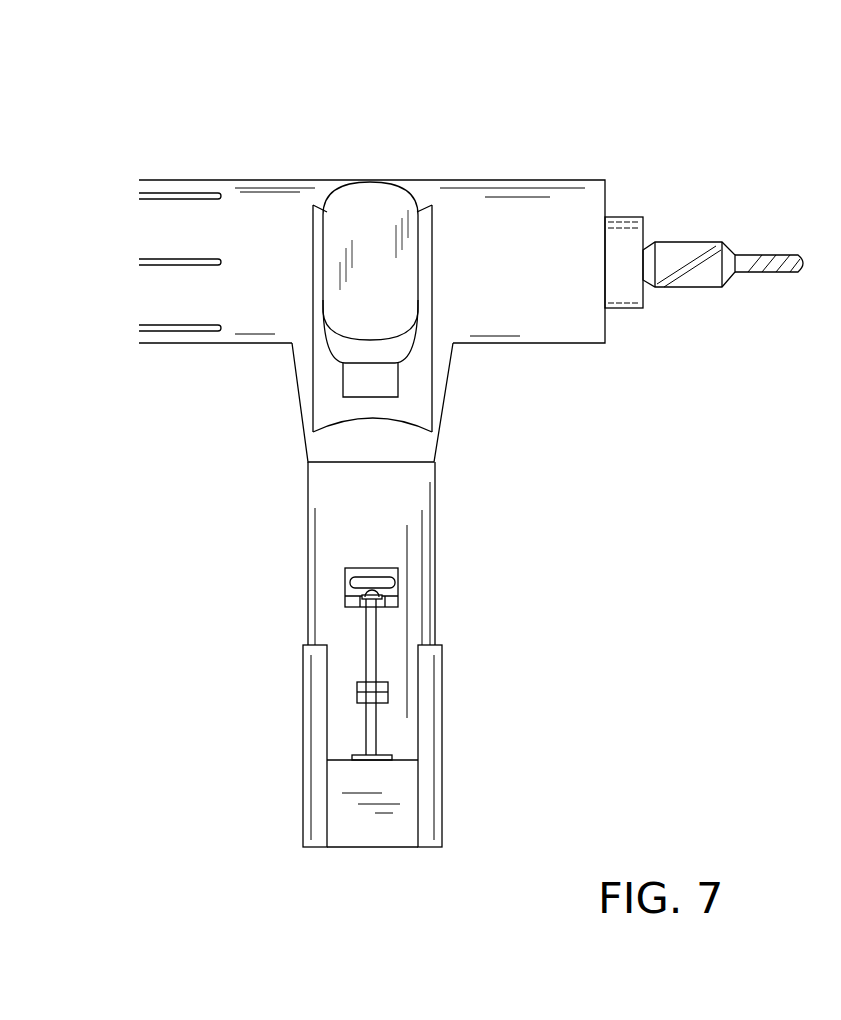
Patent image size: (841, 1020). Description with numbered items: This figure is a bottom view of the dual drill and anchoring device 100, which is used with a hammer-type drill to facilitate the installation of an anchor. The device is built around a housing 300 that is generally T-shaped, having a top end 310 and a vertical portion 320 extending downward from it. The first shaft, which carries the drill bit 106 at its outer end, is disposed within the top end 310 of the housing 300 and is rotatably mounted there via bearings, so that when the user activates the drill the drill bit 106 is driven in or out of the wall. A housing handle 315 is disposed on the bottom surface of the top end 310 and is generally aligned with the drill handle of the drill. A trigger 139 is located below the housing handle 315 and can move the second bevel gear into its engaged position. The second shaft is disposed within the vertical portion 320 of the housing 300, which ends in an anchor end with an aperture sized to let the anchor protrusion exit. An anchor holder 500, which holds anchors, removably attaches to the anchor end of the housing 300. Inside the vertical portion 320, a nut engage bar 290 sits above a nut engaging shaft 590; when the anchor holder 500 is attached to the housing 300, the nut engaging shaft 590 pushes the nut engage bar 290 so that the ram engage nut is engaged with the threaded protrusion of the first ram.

The dual drill and anchoring device 100 is at (303, 82).
The housing 300 is at (530, 303).
The top end 310 is at (540, 242).
The housing handle 315 is at (383, 215).
The trigger 139 is at (343, 377).
The vertical portion 320 is at (397, 506).
The nut engage bar 290 is at (352, 582).
The nut engaging shaft 590 is at (375, 657).
The anchor holder 500 is at (347, 823).
The drill bit 106 is at (687, 287).